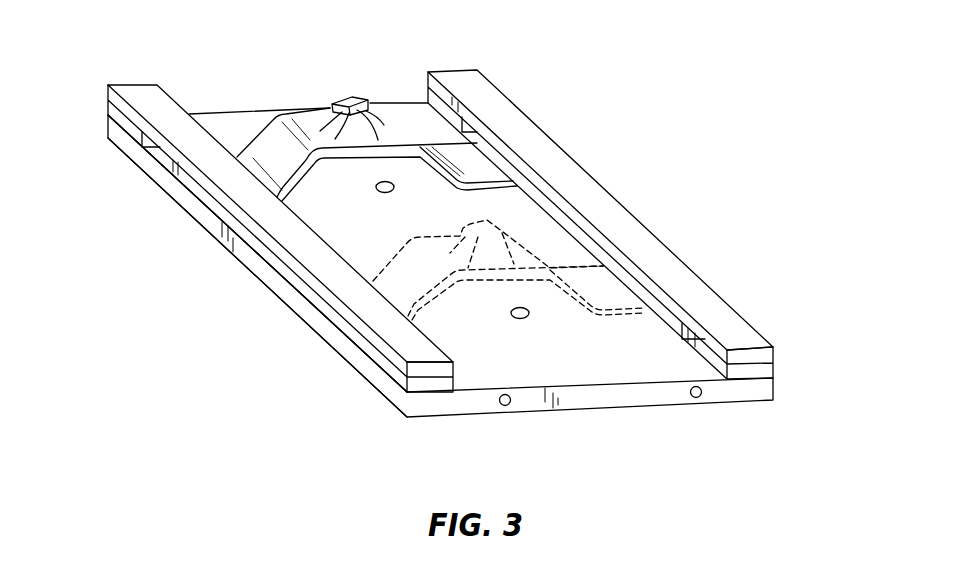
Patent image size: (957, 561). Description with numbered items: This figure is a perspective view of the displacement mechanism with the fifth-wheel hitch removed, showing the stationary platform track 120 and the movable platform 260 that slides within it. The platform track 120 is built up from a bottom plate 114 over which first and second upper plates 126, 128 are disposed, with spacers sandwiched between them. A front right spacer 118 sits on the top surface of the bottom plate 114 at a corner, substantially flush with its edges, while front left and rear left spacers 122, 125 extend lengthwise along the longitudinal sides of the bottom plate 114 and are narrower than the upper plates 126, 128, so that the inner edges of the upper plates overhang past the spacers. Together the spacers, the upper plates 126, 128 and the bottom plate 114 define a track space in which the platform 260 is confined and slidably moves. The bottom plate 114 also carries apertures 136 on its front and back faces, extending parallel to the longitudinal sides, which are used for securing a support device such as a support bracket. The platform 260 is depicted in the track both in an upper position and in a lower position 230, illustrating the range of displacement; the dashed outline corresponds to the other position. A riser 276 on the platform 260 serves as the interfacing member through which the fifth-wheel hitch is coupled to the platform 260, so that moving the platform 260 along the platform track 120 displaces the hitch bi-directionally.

The bottom plate 114 is at (440, 292).
The front right spacer 118 is at (777, 368).
The platform track 120 is at (467, 252).
The front left spacer 122 is at (377, 368).
The rear left spacer 125 is at (125, 127).
The first upper plate 126 is at (643, 230).
The second upper plate 128 is at (358, 296).
The aperture 136 is at (696, 398).
The lower position 230 is at (718, 269).
The platform 260 is at (410, 183).
The riser 276 is at (334, 107).